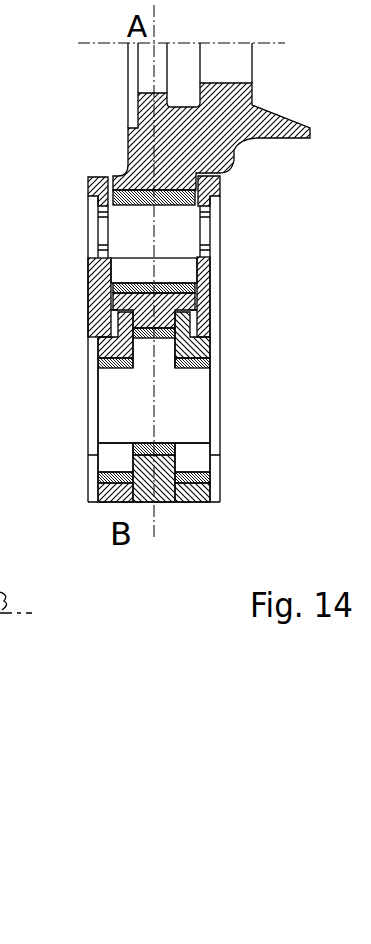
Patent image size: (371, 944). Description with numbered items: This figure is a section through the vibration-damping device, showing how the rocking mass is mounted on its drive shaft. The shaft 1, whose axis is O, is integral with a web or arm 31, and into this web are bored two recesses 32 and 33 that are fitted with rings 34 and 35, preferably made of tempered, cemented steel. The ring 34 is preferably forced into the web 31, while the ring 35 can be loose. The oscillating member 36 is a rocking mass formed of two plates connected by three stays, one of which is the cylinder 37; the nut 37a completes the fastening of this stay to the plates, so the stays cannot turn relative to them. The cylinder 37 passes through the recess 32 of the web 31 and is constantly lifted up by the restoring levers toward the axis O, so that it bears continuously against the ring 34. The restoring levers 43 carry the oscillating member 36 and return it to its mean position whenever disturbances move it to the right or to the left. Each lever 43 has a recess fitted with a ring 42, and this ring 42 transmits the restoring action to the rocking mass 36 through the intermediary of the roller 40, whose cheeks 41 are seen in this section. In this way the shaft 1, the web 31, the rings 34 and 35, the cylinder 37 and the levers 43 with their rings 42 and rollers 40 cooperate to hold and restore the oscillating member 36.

The shaft 1 is at (228, 118).
The axis o is at (101, 47).
The web or arm 31 is at (200, 183).
The recess 32 is at (177, 275).
The recess 33 is at (160, 356).
The ring 34 is at (185, 200).
The ring 35 is at (165, 333).
The oscillating member 36 is at (97, 302).
The cylinder 37 is at (213, 237).
The nut 37a is at (95, 228).
The roller 40 is at (125, 402).
The cheeks 41 is at (92, 450).
The ring 42 is at (108, 483).
The restoring lever 43 is at (112, 348).